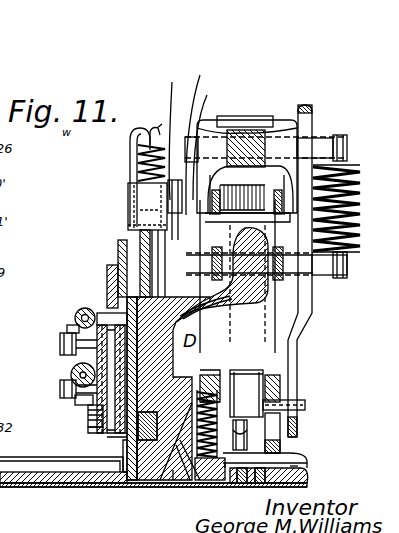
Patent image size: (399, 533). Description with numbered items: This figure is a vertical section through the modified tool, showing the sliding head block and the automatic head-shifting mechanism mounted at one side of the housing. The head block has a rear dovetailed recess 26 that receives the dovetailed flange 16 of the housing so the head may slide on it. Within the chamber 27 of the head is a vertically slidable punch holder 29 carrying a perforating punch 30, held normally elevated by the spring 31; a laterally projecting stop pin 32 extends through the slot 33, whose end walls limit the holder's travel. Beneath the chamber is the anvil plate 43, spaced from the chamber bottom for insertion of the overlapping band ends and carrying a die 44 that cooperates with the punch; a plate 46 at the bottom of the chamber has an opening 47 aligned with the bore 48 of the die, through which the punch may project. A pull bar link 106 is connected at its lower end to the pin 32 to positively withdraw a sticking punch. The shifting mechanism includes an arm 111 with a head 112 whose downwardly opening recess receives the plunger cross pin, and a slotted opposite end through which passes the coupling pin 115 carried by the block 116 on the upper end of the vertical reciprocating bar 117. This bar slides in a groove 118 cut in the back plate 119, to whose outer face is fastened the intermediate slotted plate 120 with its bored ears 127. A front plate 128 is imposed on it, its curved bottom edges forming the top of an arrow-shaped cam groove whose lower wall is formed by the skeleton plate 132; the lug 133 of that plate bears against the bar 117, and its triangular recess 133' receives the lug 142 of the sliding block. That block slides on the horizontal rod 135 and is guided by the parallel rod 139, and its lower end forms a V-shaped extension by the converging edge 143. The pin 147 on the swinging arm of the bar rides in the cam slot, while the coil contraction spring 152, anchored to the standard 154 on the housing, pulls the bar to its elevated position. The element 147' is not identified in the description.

The dovetailed flange 16 is at (150, 475).
The dovetailed recess 26 is at (185, 475).
The chamber 27 is at (242, 372).
The punch holder 29 is at (255, 392).
The perforating punch 30 is at (265, 460).
The spring 31 is at (185, 470).
The stop pin 32 is at (285, 402).
The slot 33 is at (280, 425).
The anvil plate 43 is at (300, 476).
The die 44 is at (260, 487).
The plate 46 is at (248, 445).
The opening 47 is at (295, 466).
The bore 48 is at (250, 484).
The pull bar link 106 is at (312, 312).
The arm 111 is at (175, 76).
The head 112 is at (198, 160).
The coupling pin 115 is at (200, 75).
The block 116 is at (134, 195).
The reciprocating bar 117 is at (145, 240).
The groove 118 is at (100, 340).
The back plate 119 is at (123, 450).
The intermediate slotted plate 120 is at (115, 436).
The bored ears 127 is at (13, 201).
The front plate 128 is at (110, 265).
The skeleton plate 132 is at (92, 430).
The lug 133 is at (52, 344).
The triangular recess 133' is at (52, 389).
The horizontal rod 135 is at (105, 318).
The horizontal rod 139 is at (71, 372).
The lug 142 is at (75, 400).
The converging side edge 143 is at (88, 414).
The pin 147 is at (78, 286).
The pin 147' is at (43, 324).
The coil contraction spring 152 is at (143, 158).
The standard 154 is at (152, 128).